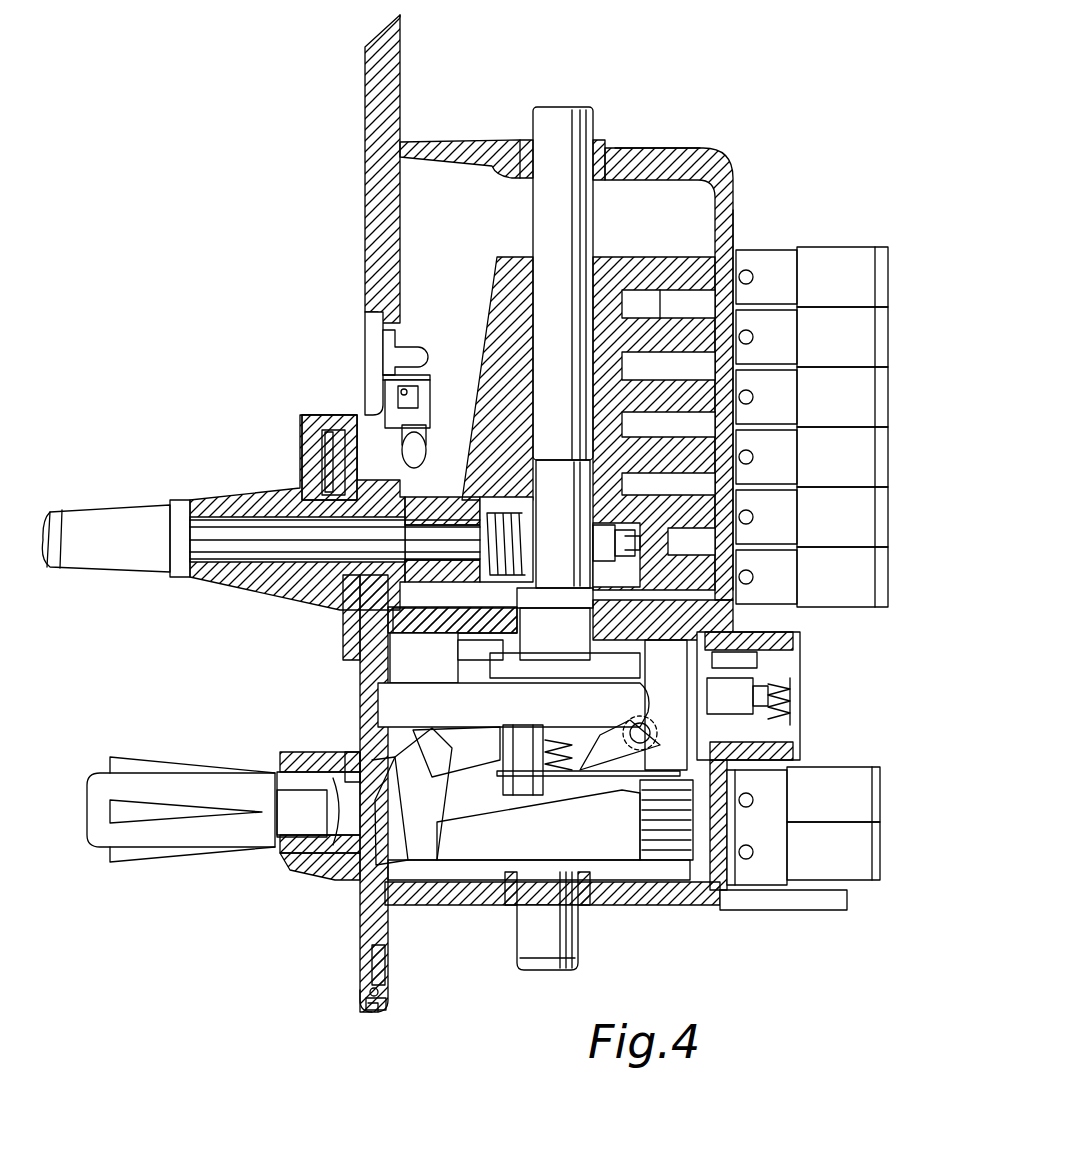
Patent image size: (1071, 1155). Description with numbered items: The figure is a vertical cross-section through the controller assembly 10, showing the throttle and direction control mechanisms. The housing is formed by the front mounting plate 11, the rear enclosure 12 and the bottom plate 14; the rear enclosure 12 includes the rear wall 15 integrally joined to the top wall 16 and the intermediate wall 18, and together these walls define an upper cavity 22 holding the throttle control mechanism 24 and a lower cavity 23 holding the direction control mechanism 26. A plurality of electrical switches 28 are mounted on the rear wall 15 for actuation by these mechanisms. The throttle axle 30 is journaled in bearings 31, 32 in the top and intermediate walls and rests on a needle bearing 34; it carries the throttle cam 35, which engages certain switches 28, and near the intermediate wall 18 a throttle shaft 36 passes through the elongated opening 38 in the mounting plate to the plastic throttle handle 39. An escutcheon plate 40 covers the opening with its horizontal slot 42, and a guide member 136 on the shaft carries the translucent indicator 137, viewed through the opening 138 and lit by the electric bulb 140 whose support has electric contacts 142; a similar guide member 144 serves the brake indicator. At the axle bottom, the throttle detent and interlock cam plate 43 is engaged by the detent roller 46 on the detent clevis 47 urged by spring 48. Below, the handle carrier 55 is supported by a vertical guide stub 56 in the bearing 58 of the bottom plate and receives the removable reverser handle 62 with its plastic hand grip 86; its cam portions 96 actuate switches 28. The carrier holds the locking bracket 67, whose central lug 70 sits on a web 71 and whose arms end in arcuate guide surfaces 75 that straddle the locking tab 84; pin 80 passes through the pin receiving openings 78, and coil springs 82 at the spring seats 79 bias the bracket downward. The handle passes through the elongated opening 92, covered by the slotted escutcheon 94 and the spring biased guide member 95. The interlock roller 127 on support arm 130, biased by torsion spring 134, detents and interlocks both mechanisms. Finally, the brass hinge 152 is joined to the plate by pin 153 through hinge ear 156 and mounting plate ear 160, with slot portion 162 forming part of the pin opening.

The controller assembly 10 is at (436, 112).
The front mounting plate 11 is at (362, 217).
The rear enclosure 12 is at (706, 354).
The bottom plate 14 is at (636, 906).
The rear wall 15 is at (740, 215).
The top wall 16 is at (458, 152).
The intermediate wall 18 is at (412, 598).
The upper cavity 22 is at (640, 183).
The lower cavity 23 is at (400, 666).
The throttle control mechanism 24 is at (644, 254).
The direction control mechanism 26 is at (372, 762).
The electrical switches 28 is at (820, 248).
The throttle axle 30 is at (540, 216).
The bearing 31 is at (602, 152).
The bearing 32 is at (576, 625).
The needle bearing 34 is at (600, 595).
The throttle cam 35 is at (500, 296).
The throttle shaft 36 is at (240, 548).
The elongated opening 38 is at (388, 442).
The throttle handle 39 is at (120, 508).
The escutcheon plate 40 is at (252, 494).
The slot 42 is at (222, 518).
The throttle detent and interlock cam plate 43 is at (470, 684).
The detent roller 46 is at (782, 690).
The detent clevis 47 is at (772, 660).
The spring 48 is at (803, 708).
The handle carrier 55 is at (478, 880).
The vertical guide stub 56 is at (578, 960).
The bearing 58 is at (528, 922).
The reverser handle 62 is at (205, 838).
The locking bracket 67 is at (528, 815).
The central vertical lug 70 is at (445, 738).
The web 71 is at (515, 738).
The arcuate guide surfaces 75 is at (412, 798).
The pin receiving openings 78 is at (588, 705).
The spring seats 79 is at (612, 792).
The pin 80 is at (645, 724).
The coil springs 82 is at (590, 728).
The locking tab 84 is at (462, 684).
The hand grip 86 is at (135, 768).
The elongated opening 92 is at (330, 872).
The slotted escutcheon 94 is at (292, 754).
The spring biased guide member 95 is at (292, 848).
The cam portions 96 is at (732, 814).
The interlock roller 127 is at (520, 745).
The support arm 130 is at (632, 684).
The torsion spring 134 is at (692, 880).
The guide member 136 is at (476, 506).
The arcuate translucent indicator 137 is at (310, 437).
The opening 138 is at (340, 470).
The electric bulb 140 is at (422, 452).
The electric contacts 142 is at (415, 358).
The guide member 144 is at (366, 337).
The brass hinge 152 is at (386, 960).
The pin 153 is at (371, 1015).
The hinge ear 156 is at (386, 1006).
The mounting plate ear 160 is at (358, 1008).
The slot portion 162 is at (380, 992).